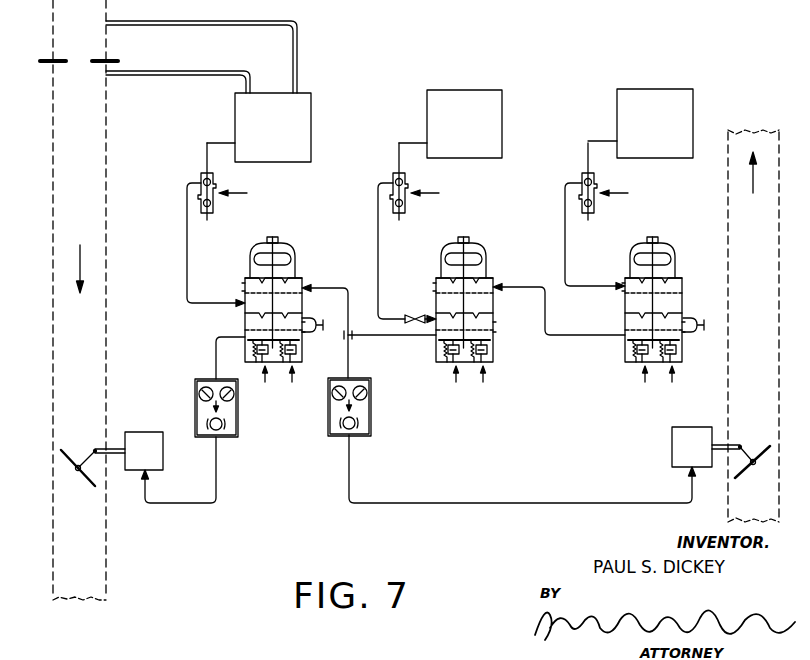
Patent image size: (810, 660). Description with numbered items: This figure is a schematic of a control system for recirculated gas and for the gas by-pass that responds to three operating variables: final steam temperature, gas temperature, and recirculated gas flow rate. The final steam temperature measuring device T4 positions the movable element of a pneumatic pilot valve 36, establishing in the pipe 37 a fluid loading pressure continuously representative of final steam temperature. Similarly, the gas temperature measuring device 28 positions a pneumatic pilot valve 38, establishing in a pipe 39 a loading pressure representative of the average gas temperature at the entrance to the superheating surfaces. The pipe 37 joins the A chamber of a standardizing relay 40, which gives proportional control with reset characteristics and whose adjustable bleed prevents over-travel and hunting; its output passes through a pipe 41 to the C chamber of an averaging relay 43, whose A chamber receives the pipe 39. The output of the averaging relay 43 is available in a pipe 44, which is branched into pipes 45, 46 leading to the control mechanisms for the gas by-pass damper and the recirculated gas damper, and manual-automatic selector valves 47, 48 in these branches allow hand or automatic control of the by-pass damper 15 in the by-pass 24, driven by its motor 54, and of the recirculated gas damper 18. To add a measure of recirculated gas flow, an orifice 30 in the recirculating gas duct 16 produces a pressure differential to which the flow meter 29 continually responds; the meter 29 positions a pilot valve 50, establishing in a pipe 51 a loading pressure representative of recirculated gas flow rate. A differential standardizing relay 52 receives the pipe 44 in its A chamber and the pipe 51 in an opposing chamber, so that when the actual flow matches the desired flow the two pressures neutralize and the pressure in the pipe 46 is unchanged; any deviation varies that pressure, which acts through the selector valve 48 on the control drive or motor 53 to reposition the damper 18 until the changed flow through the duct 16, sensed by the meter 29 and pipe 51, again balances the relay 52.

The gas by-pass damper 15 is at (738, 478).
The recirculating gas duct 16 is at (106, 168).
The recirculated gas damper 18 is at (95, 486).
The gas by-pass 24 is at (728, 388).
The gas temperature measuring device 28 is at (493, 90).
The flow meter 29 is at (311, 93).
The orifice 30 is at (63, 57).
The pneumatic pilot valve 36 is at (595, 210).
The pipe 37 is at (565, 260).
The pneumatic pilot valve 38 is at (406, 210).
The pipe 39 is at (378, 262).
The standardizing relay 40 is at (675, 250).
The pipe 41 is at (565, 337).
The averaging relay 43 is at (484, 250).
The pipe 44 is at (398, 337).
The pipe 45 is at (352, 362).
The pipe 46 is at (216, 348).
The manual-automatic selector valve 47 is at (370, 412).
The manual-automatic selector valve 48 is at (238, 430).
The pilot valve 50 is at (214, 210).
The pipe 51 is at (187, 263).
The differential standardizing relay 52 is at (293, 252).
The control drive or motor 53 is at (170, 467).
The motor 54 is at (530, 465).
The final steam temperature measuring device T4 is at (688, 89).